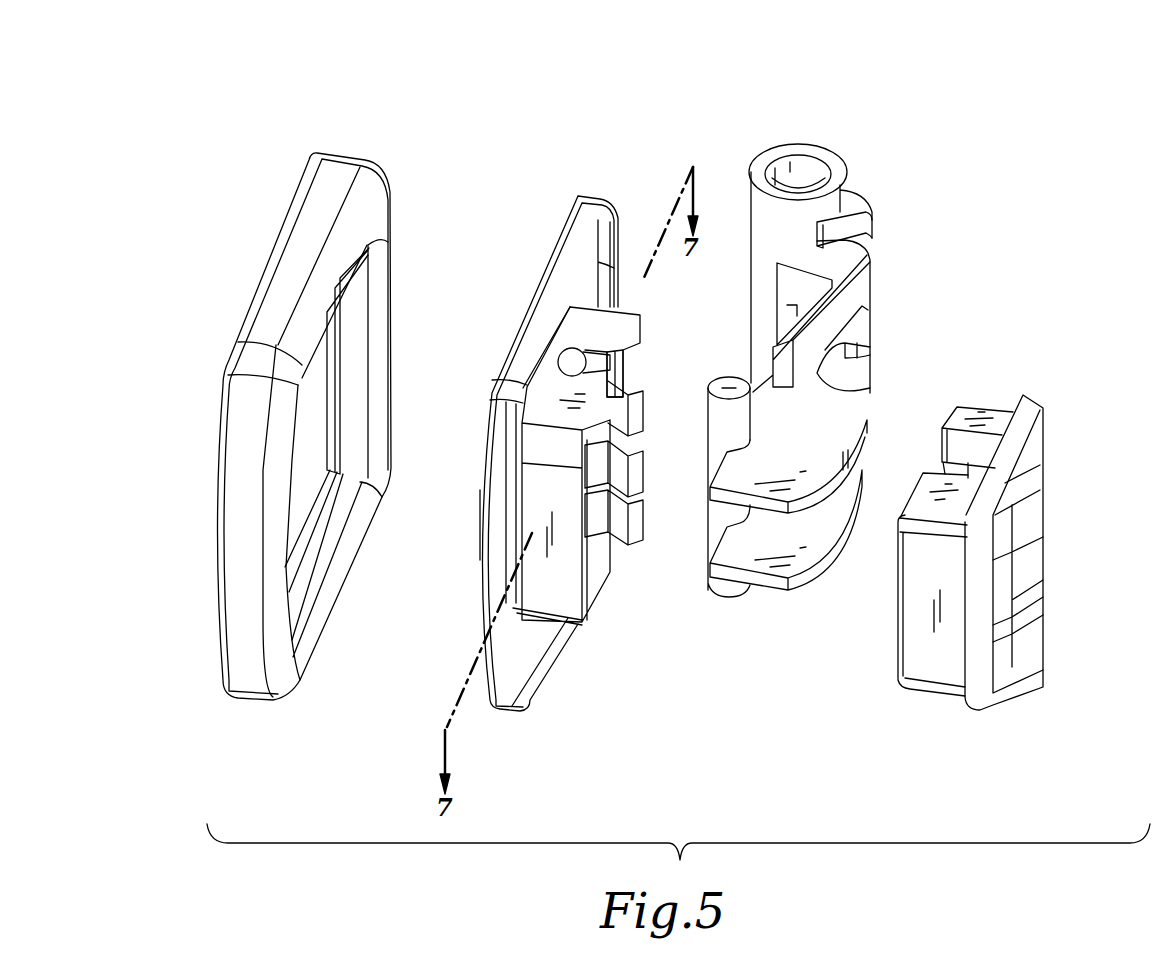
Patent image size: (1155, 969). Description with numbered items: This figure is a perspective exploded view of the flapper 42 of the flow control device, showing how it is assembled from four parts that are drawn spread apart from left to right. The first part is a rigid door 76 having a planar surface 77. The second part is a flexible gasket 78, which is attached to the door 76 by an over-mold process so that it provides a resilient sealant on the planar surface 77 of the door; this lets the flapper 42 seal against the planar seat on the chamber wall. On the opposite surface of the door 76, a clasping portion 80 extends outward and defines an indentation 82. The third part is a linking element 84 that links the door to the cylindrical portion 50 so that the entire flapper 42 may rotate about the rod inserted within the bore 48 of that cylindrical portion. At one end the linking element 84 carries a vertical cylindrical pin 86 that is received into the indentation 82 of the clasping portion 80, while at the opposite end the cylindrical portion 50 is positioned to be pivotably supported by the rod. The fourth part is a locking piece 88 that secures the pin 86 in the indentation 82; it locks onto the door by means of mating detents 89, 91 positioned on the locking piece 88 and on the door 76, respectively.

The flapper 42 is at (560, 395).
The bore 48 is at (802, 166).
The cylindrical portion 50 is at (838, 172).
The rigid door 76 is at (527, 429).
The planar surface 77 is at (477, 576).
The flexible gasket 78 is at (362, 150).
The clasping portion 80 is at (584, 482).
The indentation 82 is at (578, 357).
The linking element 84 is at (824, 352).
The vertical cylindrical pin 86 is at (728, 385).
The locking piece 88 is at (1002, 529).
The detent 89 is at (942, 414).
The detent 91 is at (637, 372).